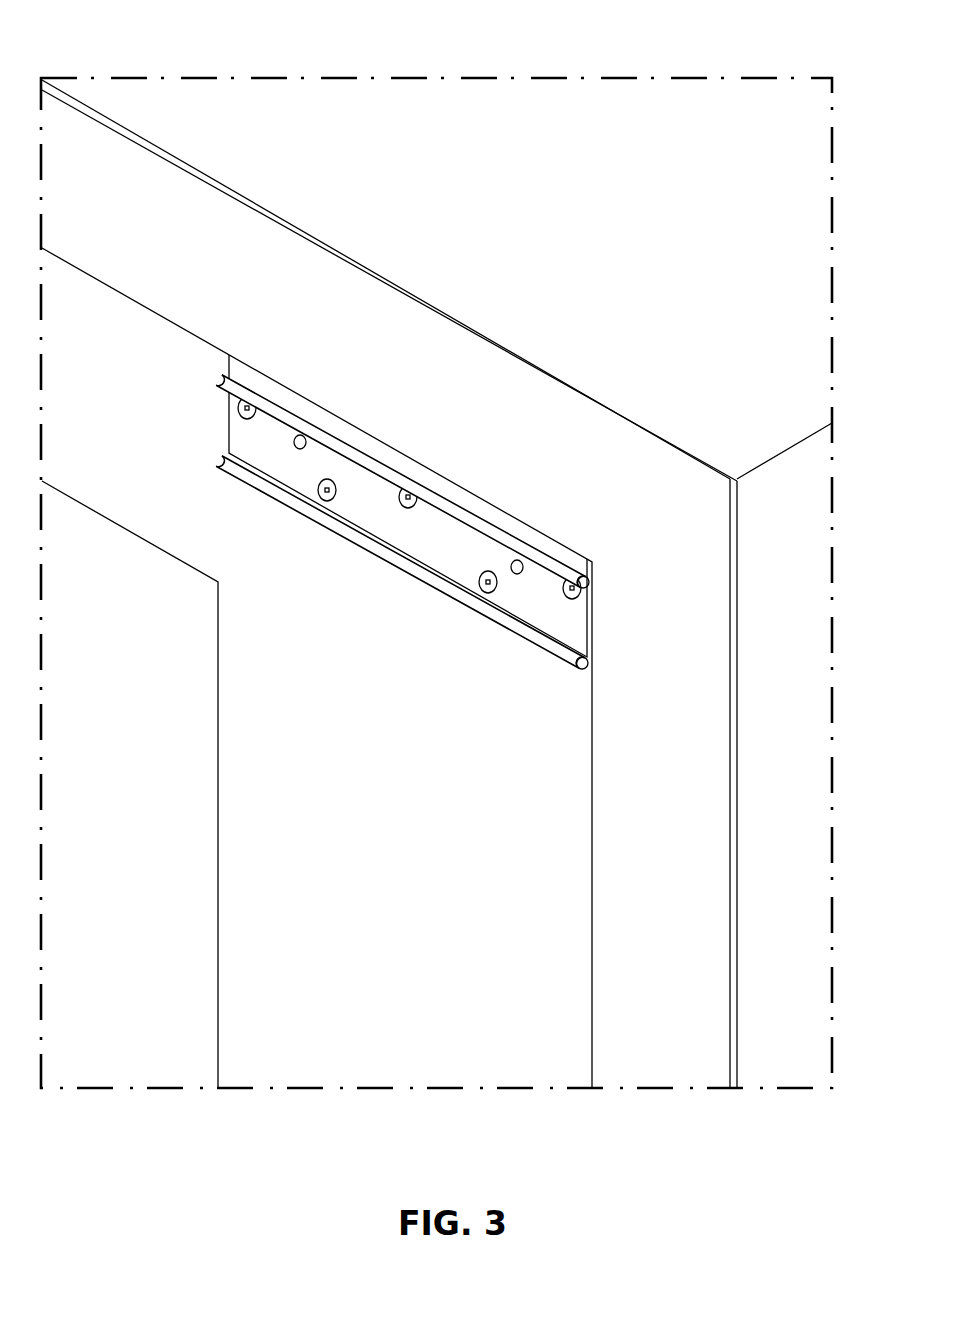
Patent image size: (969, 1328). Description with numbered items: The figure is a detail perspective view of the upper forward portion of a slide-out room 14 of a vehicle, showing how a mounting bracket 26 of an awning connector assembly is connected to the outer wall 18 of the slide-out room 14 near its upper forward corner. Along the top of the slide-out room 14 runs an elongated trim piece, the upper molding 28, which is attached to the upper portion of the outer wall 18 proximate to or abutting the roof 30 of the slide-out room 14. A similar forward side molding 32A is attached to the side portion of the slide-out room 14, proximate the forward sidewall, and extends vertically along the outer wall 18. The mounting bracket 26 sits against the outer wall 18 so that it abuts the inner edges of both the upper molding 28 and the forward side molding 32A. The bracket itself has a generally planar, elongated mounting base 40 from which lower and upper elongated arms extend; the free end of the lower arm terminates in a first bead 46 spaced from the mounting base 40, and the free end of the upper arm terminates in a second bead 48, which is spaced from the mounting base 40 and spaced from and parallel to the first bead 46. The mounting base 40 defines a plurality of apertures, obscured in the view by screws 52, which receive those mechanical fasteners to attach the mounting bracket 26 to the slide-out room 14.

The slide-out room 14 is at (677, 1110).
The outer wall 18 is at (380, 757).
The mounting bracket 26 is at (565, 634).
The upper molding 28 is at (205, 174).
The roof 30 is at (705, 182).
The forward side molding 32A is at (720, 780).
The mounting base 40 is at (242, 435).
The first bead 46 is at (435, 586).
The second bead 48 is at (216, 377).
The screws 52 is at (330, 500).